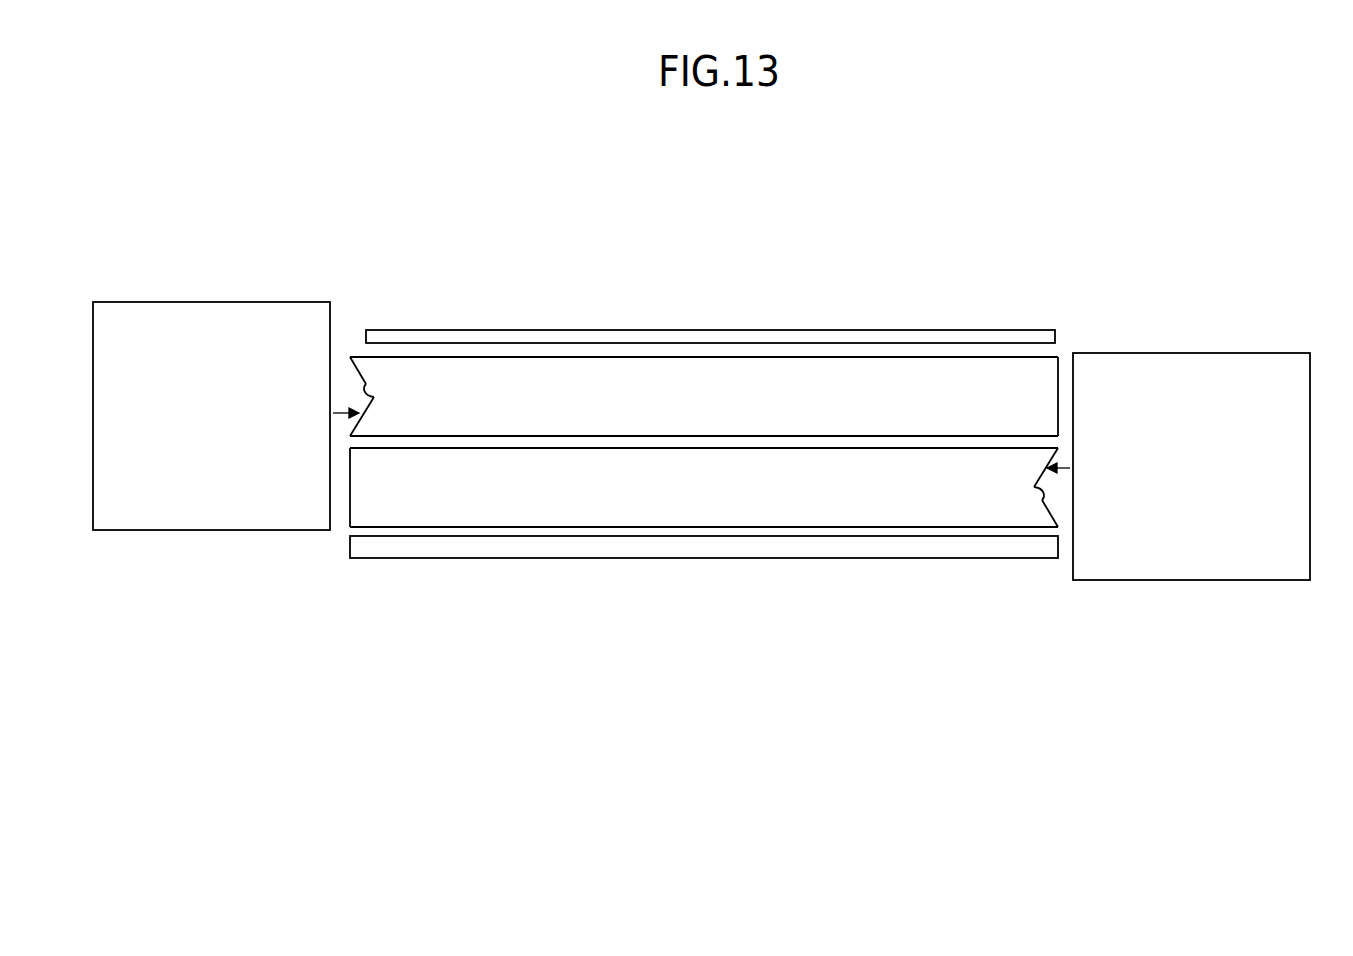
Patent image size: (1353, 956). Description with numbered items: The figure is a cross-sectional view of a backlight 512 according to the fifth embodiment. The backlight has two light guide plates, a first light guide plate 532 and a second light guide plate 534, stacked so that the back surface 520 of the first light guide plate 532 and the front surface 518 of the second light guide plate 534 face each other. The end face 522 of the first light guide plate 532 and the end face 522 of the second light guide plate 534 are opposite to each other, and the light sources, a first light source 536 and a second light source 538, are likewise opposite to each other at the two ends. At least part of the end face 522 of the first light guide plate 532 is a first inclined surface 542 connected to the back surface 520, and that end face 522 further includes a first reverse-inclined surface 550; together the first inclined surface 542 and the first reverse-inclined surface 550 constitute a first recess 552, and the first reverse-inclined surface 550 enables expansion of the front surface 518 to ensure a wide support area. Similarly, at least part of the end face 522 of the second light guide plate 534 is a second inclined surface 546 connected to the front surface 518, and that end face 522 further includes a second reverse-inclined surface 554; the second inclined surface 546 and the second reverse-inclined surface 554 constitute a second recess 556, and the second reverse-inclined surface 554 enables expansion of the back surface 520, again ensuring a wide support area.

The backlight 512 is at (1124, 318).
The front surface 518 is at (668, 357).
The back surface 520 is at (518, 436).
The end face 522 is at (711, 445).
The first light guide plate 532 is at (528, 372).
The second light guide plate 534 is at (693, 513).
The first light source 536 is at (237, 429).
The second light source 538 is at (1216, 481).
The first inclined surface 542 is at (372, 402).
The second inclined surface 546 is at (1048, 478).
The first reverse-inclined surface 550 is at (358, 377).
The first recess 552 is at (370, 395).
The second reverse-inclined surface 554 is at (1052, 512).
The second recess 556 is at (1036, 496).